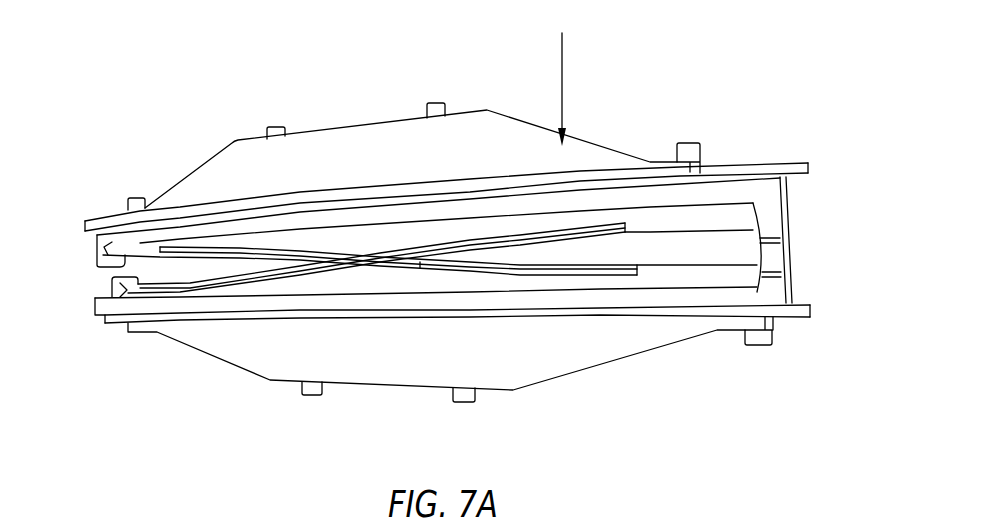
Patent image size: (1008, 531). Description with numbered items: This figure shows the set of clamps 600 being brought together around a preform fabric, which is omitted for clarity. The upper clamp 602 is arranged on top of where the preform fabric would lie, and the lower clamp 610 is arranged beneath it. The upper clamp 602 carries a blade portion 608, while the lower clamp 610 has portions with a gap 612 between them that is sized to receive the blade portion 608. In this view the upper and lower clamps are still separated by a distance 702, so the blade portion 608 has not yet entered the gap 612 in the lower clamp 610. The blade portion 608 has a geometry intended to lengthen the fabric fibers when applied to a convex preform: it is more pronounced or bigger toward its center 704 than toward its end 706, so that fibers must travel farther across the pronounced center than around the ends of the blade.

The set of clamps 600 is at (775, 415).
The upper clamp 602 is at (610, 148).
The blade portion 608 is at (555, 227).
The lower clamp 610 is at (622, 340).
The gap 612 is at (240, 270).
The distance 702 is at (183, 262).
The center 704 is at (358, 250).
The end 706 is at (230, 240).